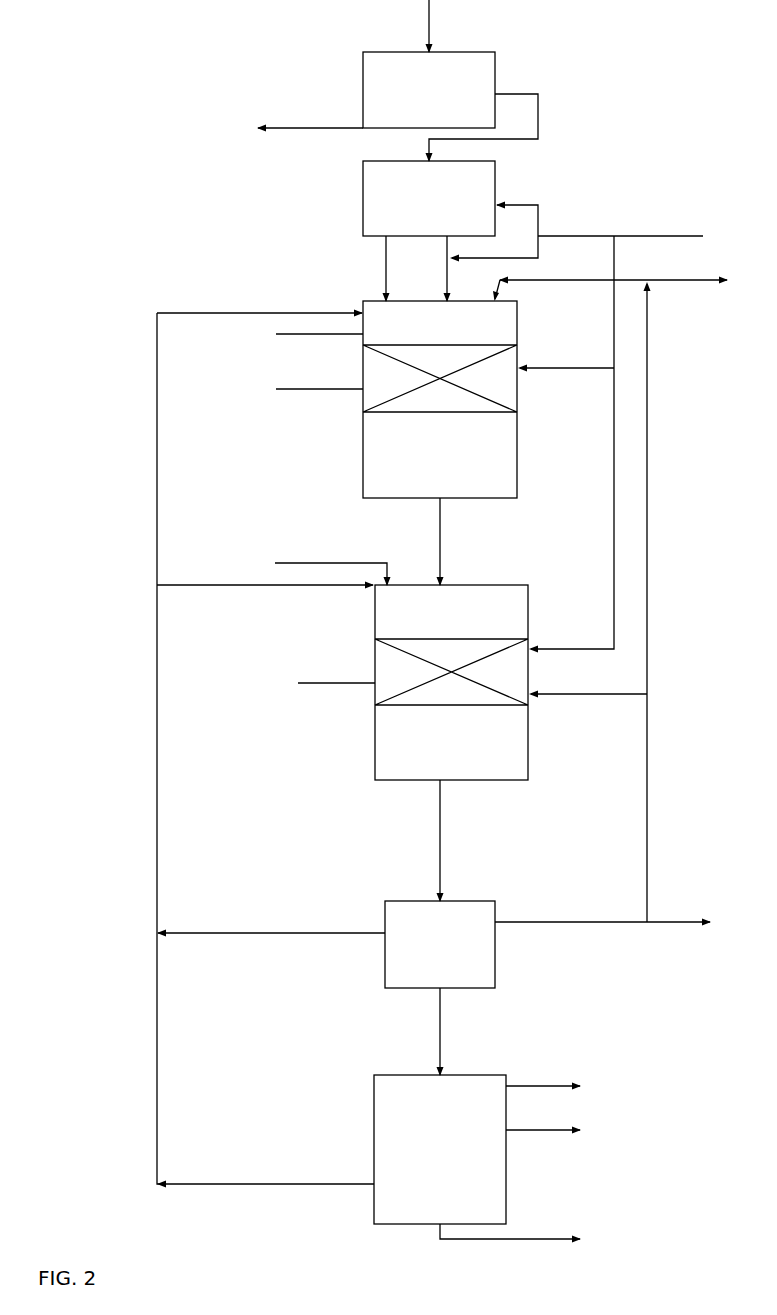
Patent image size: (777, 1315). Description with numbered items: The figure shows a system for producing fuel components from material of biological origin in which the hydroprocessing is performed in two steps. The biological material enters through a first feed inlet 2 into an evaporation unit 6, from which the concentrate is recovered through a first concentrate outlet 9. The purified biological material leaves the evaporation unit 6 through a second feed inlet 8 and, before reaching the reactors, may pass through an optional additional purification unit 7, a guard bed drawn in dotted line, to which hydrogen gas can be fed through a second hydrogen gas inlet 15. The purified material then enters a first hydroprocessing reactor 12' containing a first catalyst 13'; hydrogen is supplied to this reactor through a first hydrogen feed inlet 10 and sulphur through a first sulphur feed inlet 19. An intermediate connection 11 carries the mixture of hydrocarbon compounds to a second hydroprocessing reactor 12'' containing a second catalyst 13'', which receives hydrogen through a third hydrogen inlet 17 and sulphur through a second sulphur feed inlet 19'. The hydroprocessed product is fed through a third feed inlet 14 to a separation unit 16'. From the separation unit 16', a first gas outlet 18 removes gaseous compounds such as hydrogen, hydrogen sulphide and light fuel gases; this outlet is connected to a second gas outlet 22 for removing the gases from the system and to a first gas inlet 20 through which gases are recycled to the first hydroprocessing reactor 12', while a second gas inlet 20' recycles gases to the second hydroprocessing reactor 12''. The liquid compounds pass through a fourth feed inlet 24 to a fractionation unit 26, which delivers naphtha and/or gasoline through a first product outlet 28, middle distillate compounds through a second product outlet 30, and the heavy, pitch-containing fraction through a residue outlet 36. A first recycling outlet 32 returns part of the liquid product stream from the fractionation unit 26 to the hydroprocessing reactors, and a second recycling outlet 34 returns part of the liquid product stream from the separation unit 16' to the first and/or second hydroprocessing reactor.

The first feed inlet 2 is at (418, 26).
The evaporation unit 6 is at (429, 90).
The additional purification unit 7 is at (429, 198).
The second feed inlet 8 is at (425, 150).
The first concentrate outlet 9 is at (310, 112).
The first hydrogen feed inlet 10 is at (583, 370).
The intermediate connection 11 is at (438, 520).
The first hydroprocessing reactor 12' is at (291, 333).
The first catalyst 13' is at (287, 388).
The second hydroprocessing reactor 12'' is at (293, 605).
The second catalyst 13'' is at (302, 690).
The third feed inlet 14 is at (392, 841).
The second hydrogen gas inlet 15 is at (513, 220).
The separation unit 16' is at (440, 944).
The third hydrogen inlet 17 is at (613, 630).
The first gas outlet 18 is at (648, 410).
The first sulphur feed inlet 19 is at (374, 268).
The second sulphur feed inlet 19' is at (322, 551).
The first gas inlet 20 is at (566, 327).
The second gas inlet 20' is at (588, 726).
The second gas outlet 22 is at (680, 280).
The fourth feed inlet 24 is at (440, 1032).
The fractionation unit 26 is at (440, 1149).
The first product outlet 28 is at (568, 1085).
The second product outlet 30 is at (563, 1130).
The first recycling outlet 32 is at (265, 750).
The second recycling outlet 34 is at (271, 623).
The residue outlet 36 is at (535, 1224).